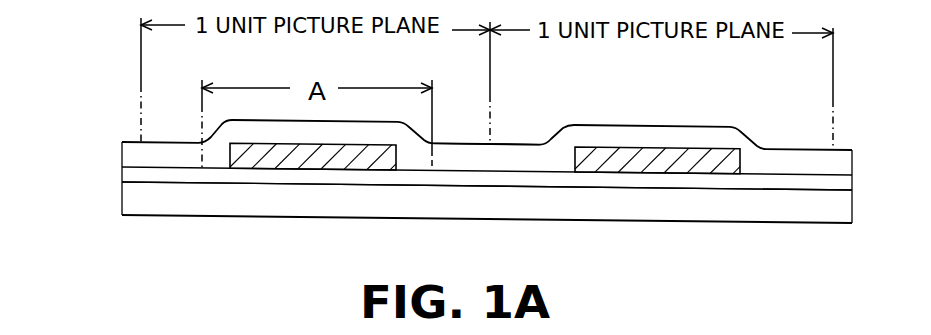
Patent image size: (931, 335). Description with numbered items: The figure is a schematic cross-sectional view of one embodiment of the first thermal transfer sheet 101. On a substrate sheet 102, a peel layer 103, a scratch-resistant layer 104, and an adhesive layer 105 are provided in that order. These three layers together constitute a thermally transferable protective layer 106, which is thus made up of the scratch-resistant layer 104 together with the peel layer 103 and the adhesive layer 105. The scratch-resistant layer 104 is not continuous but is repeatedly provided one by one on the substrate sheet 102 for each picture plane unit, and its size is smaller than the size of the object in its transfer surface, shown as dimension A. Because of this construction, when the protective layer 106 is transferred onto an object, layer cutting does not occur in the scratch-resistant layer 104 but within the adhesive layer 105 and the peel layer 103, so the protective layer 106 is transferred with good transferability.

The first thermal transfer sheet 101 is at (530, 138).
The substrate sheet 102 is at (460, 202).
The peel layer 103 is at (562, 178).
The scratch-resistant layer 104 is at (310, 160).
The adhesive layer 105 is at (457, 150).
The thermally transferable protective layer 106 is at (110, 118).